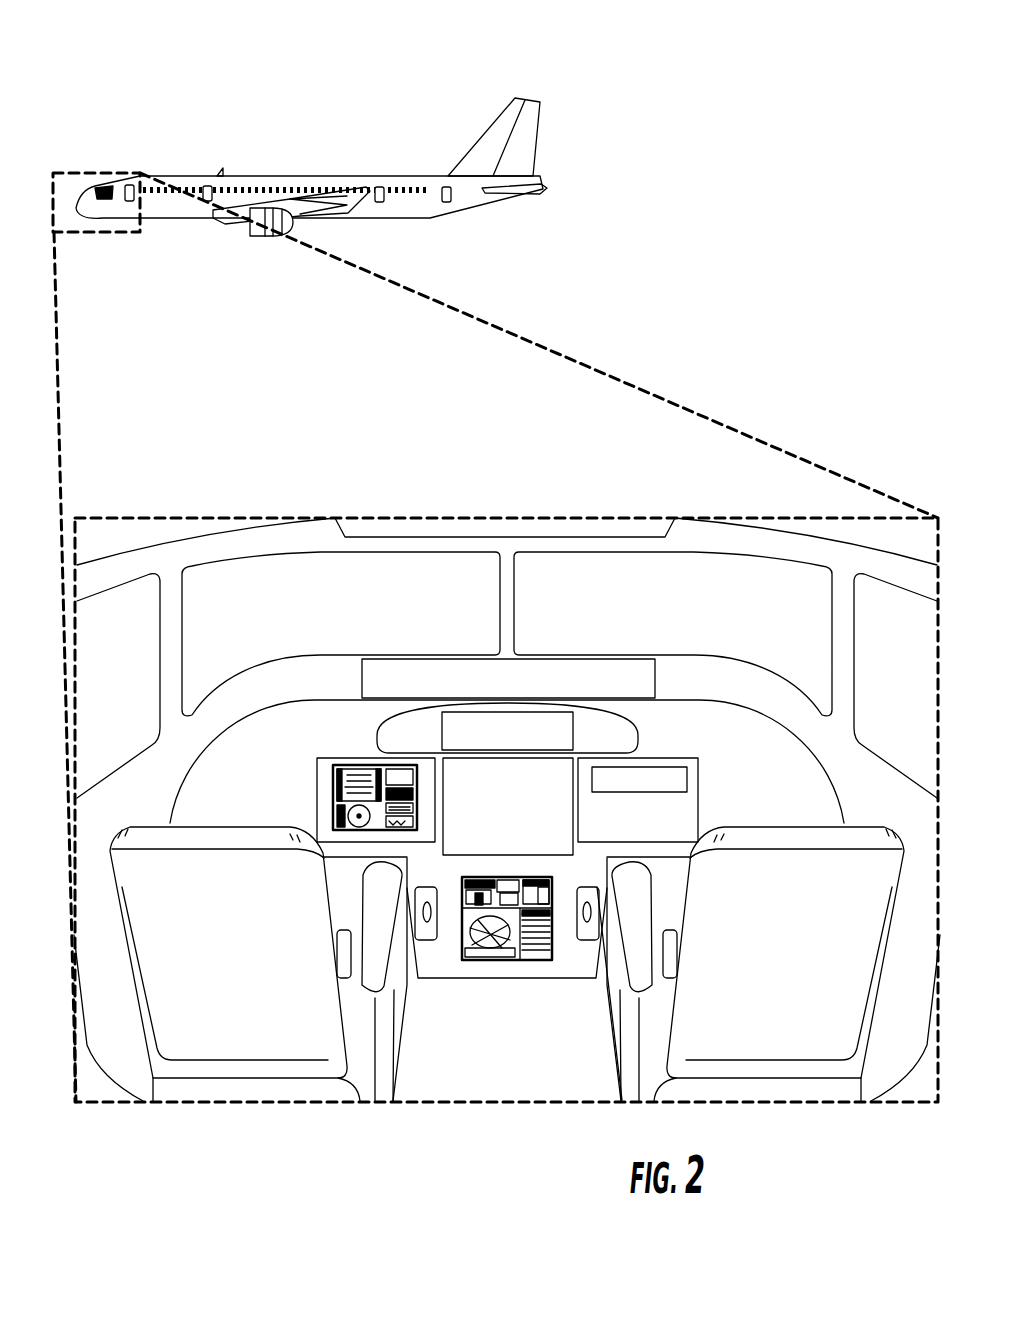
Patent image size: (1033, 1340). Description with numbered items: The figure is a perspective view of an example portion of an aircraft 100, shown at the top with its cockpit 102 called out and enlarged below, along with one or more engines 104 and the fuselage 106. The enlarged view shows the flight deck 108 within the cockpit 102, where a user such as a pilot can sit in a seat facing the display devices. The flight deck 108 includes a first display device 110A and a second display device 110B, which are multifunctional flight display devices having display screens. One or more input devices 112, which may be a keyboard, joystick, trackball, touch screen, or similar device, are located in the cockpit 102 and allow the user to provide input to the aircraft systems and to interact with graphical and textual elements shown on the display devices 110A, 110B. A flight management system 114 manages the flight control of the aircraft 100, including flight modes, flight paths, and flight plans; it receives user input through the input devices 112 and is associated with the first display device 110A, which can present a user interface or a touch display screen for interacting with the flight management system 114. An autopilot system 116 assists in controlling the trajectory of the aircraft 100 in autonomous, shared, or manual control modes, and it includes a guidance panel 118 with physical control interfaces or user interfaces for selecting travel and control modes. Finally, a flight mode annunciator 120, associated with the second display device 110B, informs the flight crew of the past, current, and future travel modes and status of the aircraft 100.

The aircraft 100 is at (182, 88).
The cockpit 102 is at (293, 533).
The engine 104 is at (255, 230).
The fuselage 106 is at (155, 212).
The flight deck 108 is at (170, 763).
The first display device 110A is at (548, 780).
The second display device 110B is at (430, 773).
The input device 112 is at (435, 887).
The flight management system 114 is at (543, 960).
The autopilot system 116 is at (617, 740).
The guidance panel 118 is at (540, 730).
The flight mode annunciator 120 is at (350, 767).